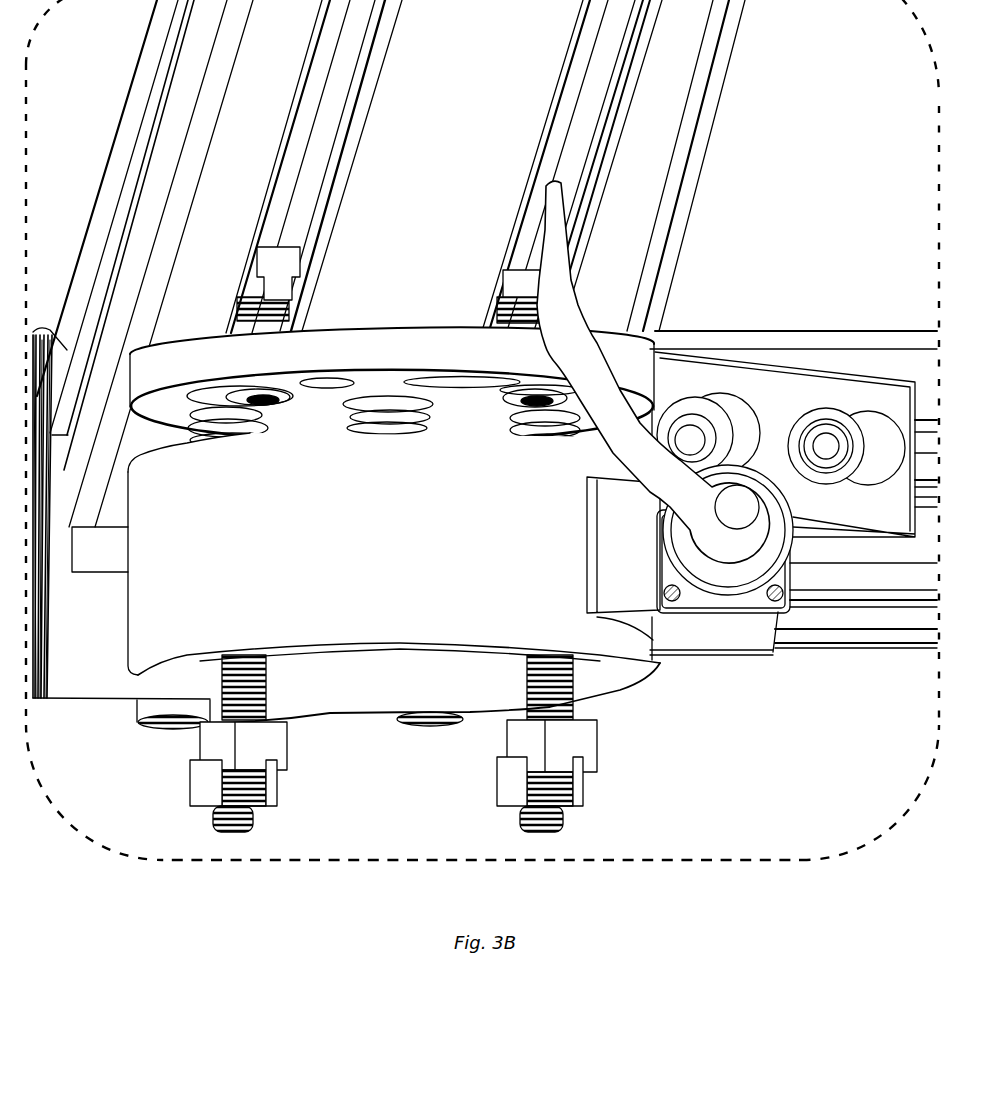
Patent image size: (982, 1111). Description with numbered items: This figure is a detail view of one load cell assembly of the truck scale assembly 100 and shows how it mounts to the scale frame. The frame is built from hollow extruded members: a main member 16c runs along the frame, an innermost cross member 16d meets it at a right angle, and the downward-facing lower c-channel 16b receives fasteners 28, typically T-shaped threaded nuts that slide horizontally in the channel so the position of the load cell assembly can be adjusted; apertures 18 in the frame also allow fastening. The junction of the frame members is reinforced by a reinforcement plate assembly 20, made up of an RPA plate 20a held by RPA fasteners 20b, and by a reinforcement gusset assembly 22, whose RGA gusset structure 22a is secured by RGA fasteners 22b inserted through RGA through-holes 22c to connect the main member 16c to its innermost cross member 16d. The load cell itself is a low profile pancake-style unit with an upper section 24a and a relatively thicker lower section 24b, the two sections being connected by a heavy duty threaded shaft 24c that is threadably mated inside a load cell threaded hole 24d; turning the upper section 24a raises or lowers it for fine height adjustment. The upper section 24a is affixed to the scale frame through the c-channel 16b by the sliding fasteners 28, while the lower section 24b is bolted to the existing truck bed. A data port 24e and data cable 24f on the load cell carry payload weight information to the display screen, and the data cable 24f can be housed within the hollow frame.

The truck scale assembly 100 is at (775, 75).
The lower c-channel 16b is at (337, 103).
The main member 16c is at (817, 617).
The innermost cross member 16d is at (685, 127).
The aperture 18 is at (557, 178).
The reinforcement plate assembly 20 is at (47, 707).
The RPA plate 20a is at (63, 680).
The RPA fastener 20b is at (167, 707).
The reinforcement gusset assembly 22 is at (720, 350).
The RGA gusset structure 22a is at (743, 370).
The RGA fastener 22b is at (805, 425).
The RGA through-hole 22c is at (865, 430).
The upper section 24a is at (620, 347).
The lower section 24b is at (600, 680).
The threaded shaft 24c is at (327, 420).
The load cell threaded hole 24d is at (373, 683).
The data port 24e is at (727, 593).
The data cable 24f is at (540, 263).
The fastener 28 is at (284, 251).